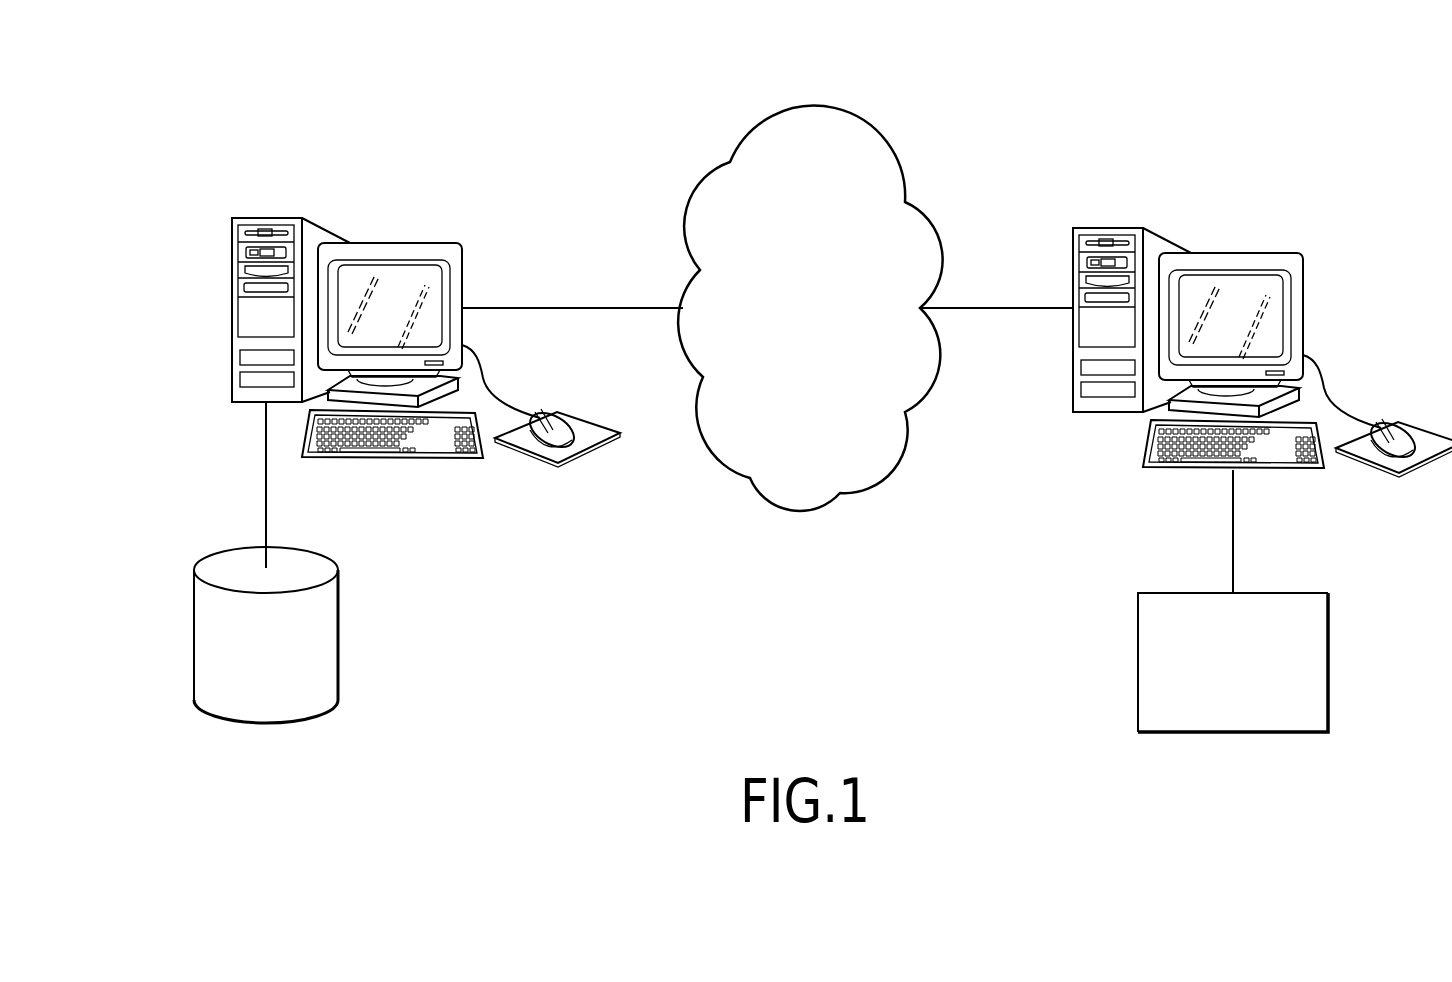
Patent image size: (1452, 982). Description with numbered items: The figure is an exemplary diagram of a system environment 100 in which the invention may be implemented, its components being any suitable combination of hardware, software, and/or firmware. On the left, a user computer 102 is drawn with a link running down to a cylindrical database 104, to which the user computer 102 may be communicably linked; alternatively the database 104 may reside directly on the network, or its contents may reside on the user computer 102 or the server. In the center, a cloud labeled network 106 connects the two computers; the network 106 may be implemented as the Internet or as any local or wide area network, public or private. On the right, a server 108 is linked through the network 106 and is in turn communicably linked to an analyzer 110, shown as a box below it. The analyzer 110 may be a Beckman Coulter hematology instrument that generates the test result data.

The system environment 100 is at (610, 138).
The user computer 102 is at (232, 253).
The database 104 is at (338, 622).
The network 106 is at (898, 153).
The server 108 is at (1074, 383).
The analyzer 110 is at (1138, 670).